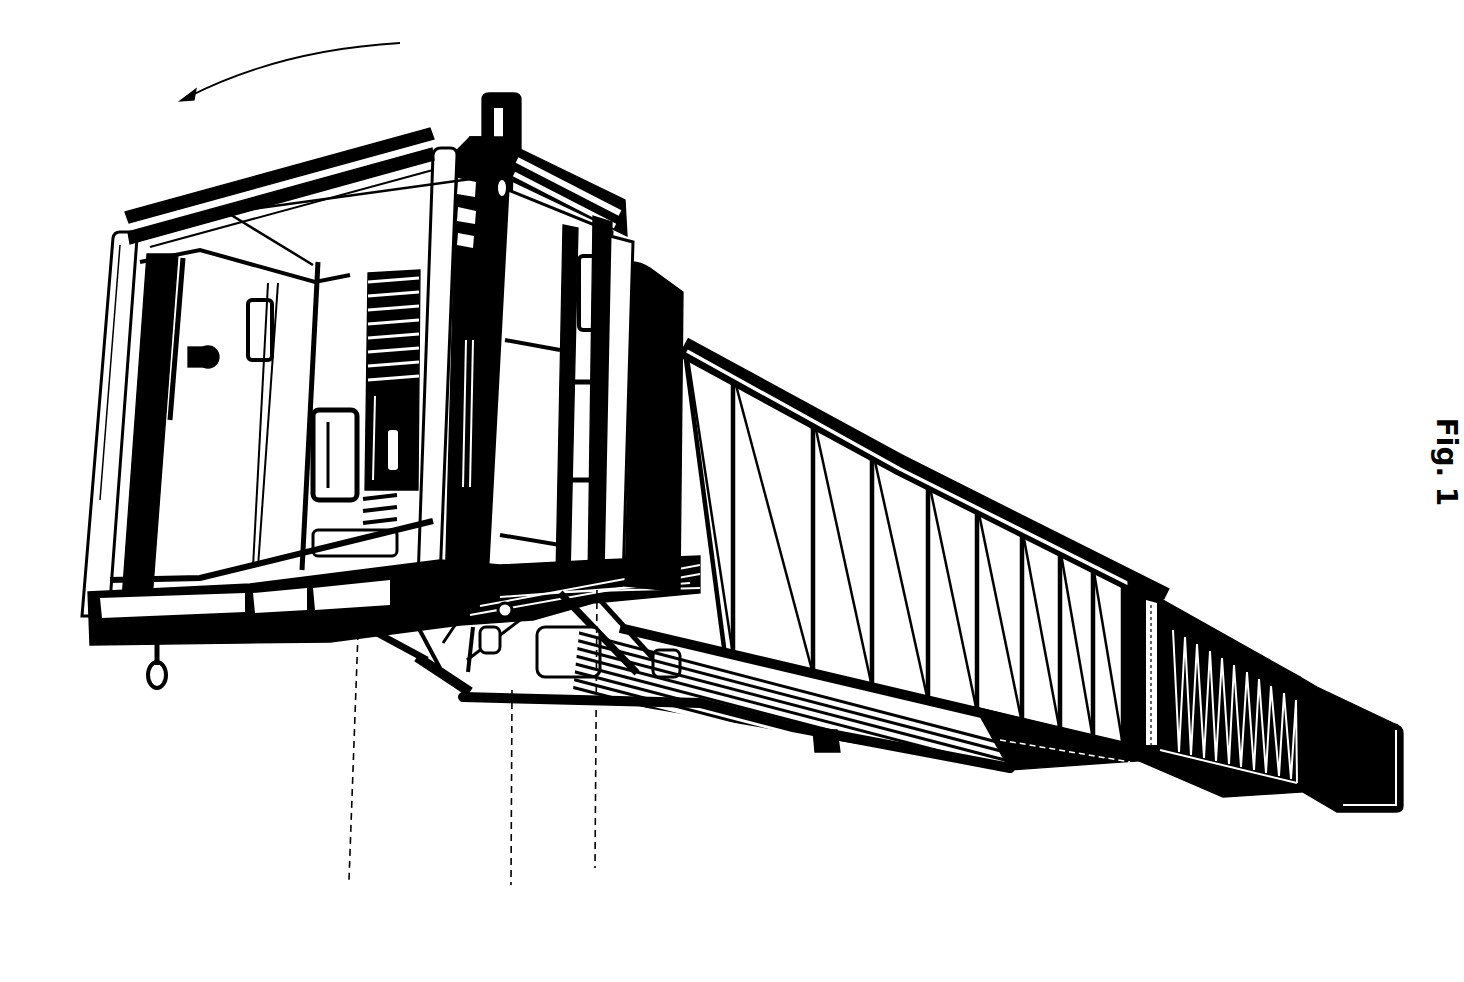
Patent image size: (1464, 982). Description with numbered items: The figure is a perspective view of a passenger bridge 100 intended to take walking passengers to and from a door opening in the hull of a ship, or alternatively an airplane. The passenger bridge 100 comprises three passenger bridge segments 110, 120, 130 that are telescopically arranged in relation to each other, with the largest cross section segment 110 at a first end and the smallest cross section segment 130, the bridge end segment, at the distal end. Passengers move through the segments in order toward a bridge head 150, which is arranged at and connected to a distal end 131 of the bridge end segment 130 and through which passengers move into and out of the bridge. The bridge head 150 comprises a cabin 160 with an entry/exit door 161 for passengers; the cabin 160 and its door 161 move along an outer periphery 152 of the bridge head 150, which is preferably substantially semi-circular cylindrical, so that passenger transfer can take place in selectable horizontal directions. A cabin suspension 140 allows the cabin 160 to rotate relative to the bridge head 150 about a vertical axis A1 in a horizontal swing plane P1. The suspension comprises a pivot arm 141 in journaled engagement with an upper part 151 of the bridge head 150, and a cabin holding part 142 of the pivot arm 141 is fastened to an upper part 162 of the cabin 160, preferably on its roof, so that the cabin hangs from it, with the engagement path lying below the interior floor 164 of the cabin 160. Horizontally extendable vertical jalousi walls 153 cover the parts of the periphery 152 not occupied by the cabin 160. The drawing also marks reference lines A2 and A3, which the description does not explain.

The passenger bridge 100 is at (767, 770).
The passenger bridge segment 110 is at (1310, 807).
The passenger bridge segment 120 is at (1153, 780).
The bridge end segment 130 is at (987, 760).
The distal end 131 is at (550, 700).
The cabin suspension 140 is at (423, 673).
The pivot arm 141 is at (443, 670).
The cabin holding part 142 is at (380, 640).
The bridge head 150 is at (691, 280).
The upper part 151 is at (643, 700).
The outer periphery 152 is at (672, 588).
The jalousi walls 153 is at (685, 313).
The cabin 160 is at (561, 148).
The entry/exit door 161 is at (192, 202).
The upper part 162 is at (398, 645).
The interior floor 164 is at (362, 312).
The vertical axis A1 is at (496, 788).
The second axis A2 is at (607, 729).
The third axis A3 is at (343, 756).
The horizontal swing plane P1 is at (278, 72).